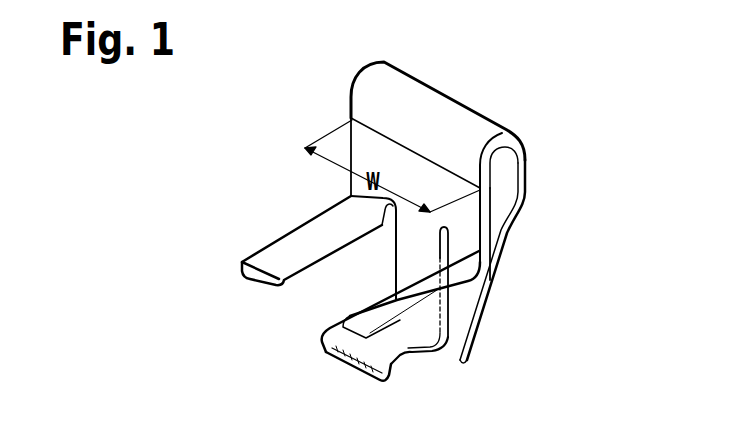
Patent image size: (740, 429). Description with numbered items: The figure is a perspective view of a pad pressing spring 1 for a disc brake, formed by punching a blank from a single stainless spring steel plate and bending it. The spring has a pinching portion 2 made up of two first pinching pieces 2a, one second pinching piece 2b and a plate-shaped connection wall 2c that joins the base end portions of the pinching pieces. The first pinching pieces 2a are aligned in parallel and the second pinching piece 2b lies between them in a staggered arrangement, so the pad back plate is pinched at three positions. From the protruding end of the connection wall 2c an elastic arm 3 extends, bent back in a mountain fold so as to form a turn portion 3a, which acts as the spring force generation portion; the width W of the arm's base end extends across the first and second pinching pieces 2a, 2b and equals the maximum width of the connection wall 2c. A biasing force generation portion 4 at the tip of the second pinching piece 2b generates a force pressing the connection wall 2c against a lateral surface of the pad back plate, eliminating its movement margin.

The pad pressing spring 1 is at (467, 88).
The pinching portion 2 is at (350, 366).
The first pinching piece 2a is at (348, 304).
The second pinching piece 2b is at (437, 358).
The connection wall 2c is at (416, 236).
The elastic arm 3 is at (499, 176).
The turn portion 3a is at (500, 130).
The biasing force generation portion 4 is at (393, 370).